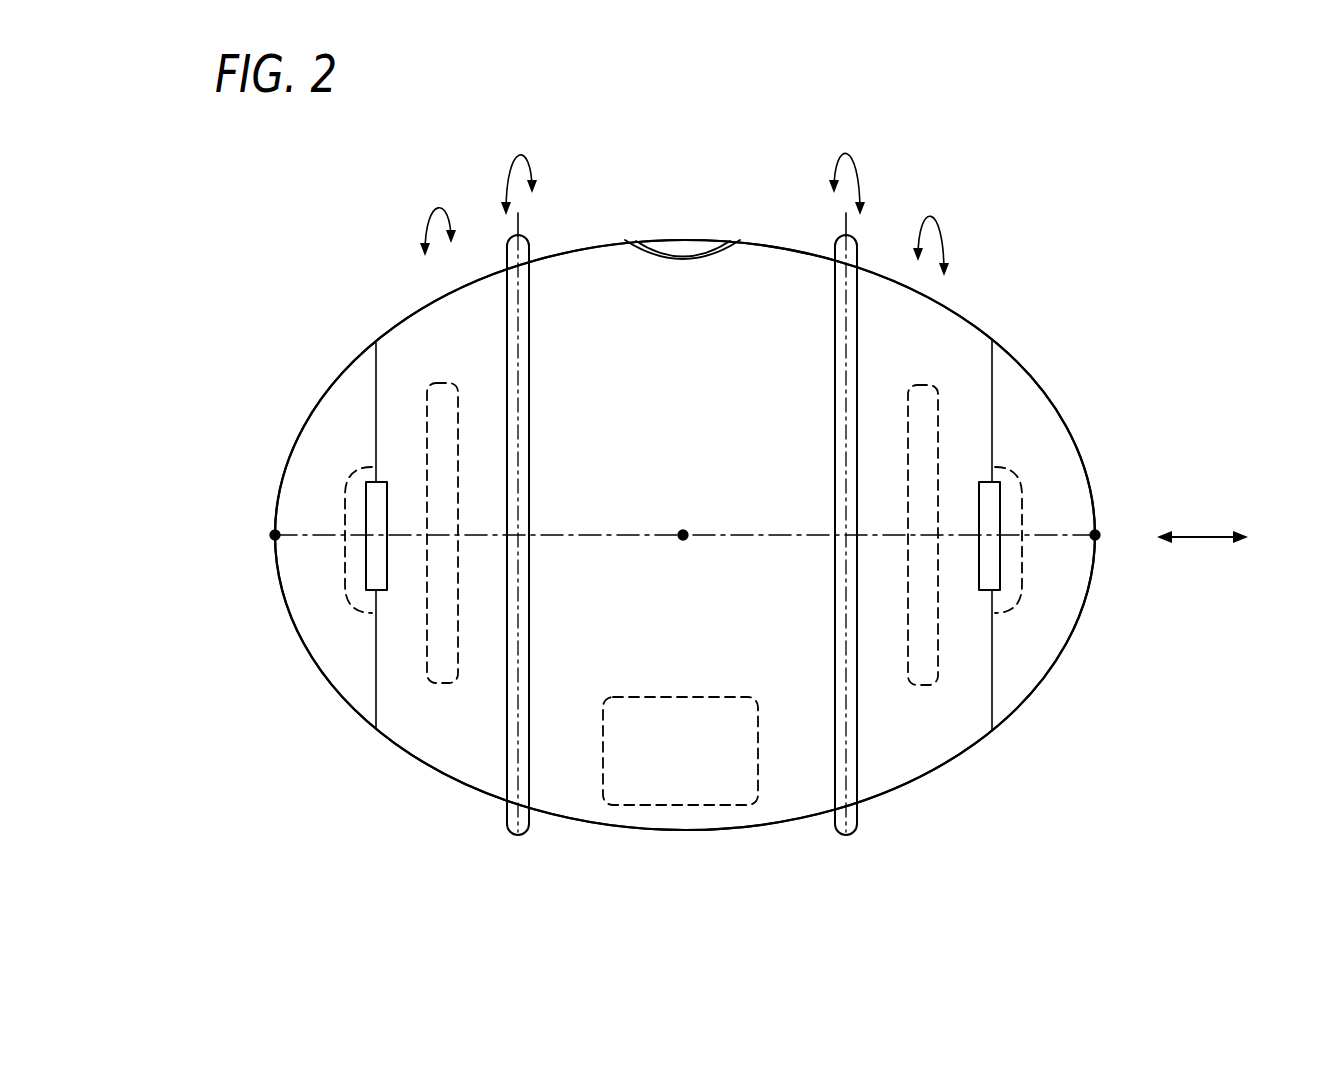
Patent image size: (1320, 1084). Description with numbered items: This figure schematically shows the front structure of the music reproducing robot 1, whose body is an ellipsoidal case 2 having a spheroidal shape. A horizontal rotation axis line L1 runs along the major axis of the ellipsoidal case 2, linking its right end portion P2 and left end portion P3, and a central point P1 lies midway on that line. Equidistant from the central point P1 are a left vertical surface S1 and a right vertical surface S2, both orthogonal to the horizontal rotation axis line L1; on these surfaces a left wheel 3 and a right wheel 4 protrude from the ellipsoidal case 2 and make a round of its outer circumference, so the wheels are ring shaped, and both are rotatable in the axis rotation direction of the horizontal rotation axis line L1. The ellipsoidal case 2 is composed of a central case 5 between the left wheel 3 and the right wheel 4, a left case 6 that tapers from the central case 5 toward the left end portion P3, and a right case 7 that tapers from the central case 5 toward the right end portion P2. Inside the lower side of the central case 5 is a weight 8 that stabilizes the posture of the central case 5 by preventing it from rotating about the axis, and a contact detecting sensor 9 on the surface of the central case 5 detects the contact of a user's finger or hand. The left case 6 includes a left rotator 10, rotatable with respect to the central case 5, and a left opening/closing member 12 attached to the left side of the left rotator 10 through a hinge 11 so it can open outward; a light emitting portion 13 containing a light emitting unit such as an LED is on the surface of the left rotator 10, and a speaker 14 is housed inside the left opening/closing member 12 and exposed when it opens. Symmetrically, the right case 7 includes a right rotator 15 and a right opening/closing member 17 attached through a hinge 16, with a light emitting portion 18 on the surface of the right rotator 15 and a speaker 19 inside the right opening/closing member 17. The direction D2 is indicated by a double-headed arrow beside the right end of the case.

The music reproducing robot 1 is at (340, 182).
The ellipsoidal case 2 is at (315, 778).
The left wheel 3 is at (530, 237).
The right wheel 4 is at (859, 238).
The central case 5 is at (755, 241).
The left case 6 is at (387, 320).
The right case 7 is at (1016, 350).
The weight 8 is at (640, 805).
The contact detecting sensor 9 is at (717, 238).
The left rotator 10 is at (433, 770).
The hinge 11 is at (366, 592).
The left opening/closing member 12 is at (281, 585).
The light emitting portion 13 is at (427, 405).
The speaker 14 is at (345, 490).
The right rotator 15 is at (917, 785).
The hinge 16 is at (979, 590).
The right opening/closing member 17 is at (1060, 653).
The light emitting portion 18 is at (926, 384).
The speaker 19 is at (1022, 488).
The horizontal rotation axis line L1 is at (1047, 532).
The central point P1 is at (686, 538).
The right end portion P2 is at (1096, 535).
The left end portion P3 is at (275, 535).
The left vertical surface S1 is at (513, 838).
The right vertical surface S2 is at (845, 838).
The direction D2 is at (1205, 539).